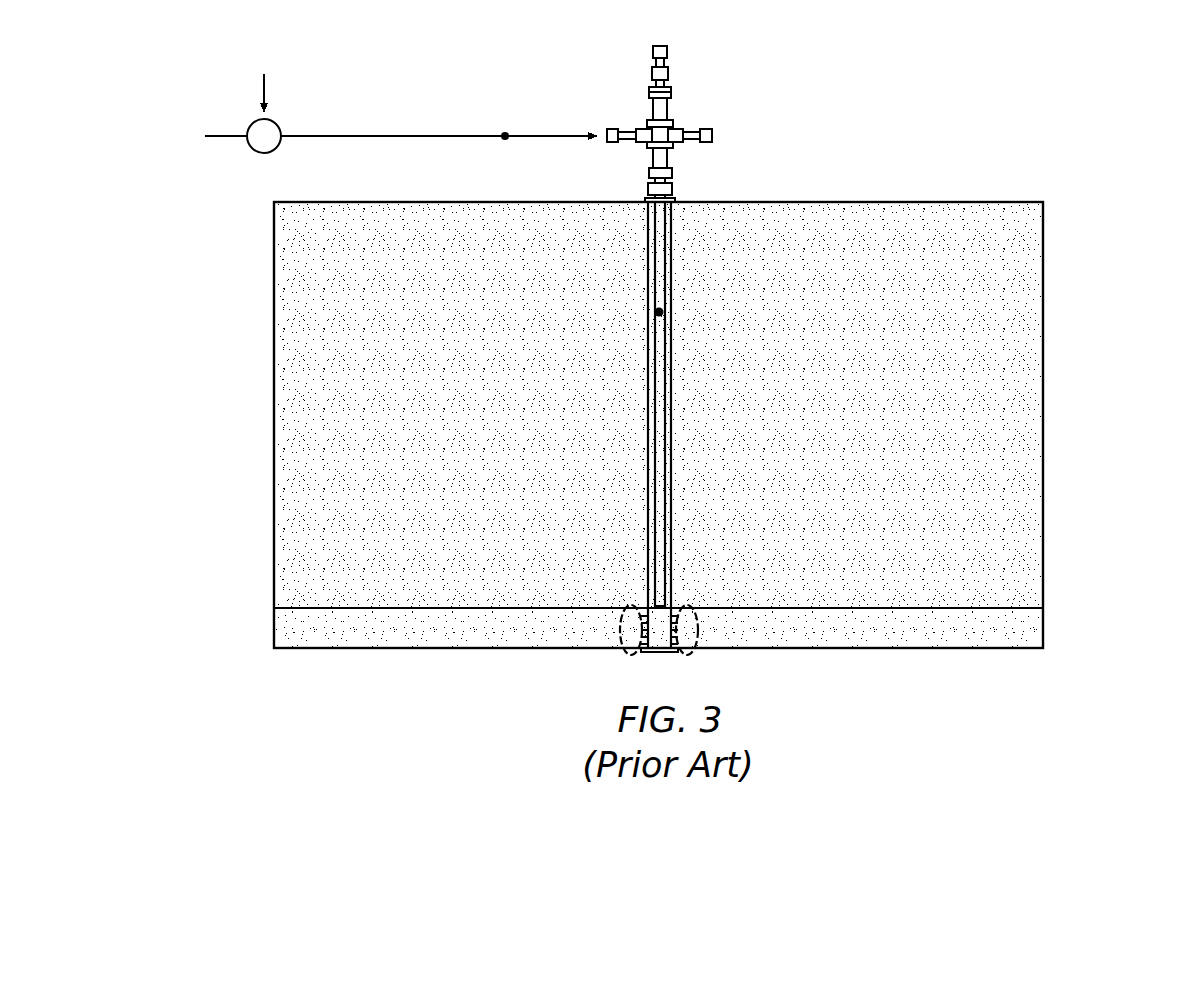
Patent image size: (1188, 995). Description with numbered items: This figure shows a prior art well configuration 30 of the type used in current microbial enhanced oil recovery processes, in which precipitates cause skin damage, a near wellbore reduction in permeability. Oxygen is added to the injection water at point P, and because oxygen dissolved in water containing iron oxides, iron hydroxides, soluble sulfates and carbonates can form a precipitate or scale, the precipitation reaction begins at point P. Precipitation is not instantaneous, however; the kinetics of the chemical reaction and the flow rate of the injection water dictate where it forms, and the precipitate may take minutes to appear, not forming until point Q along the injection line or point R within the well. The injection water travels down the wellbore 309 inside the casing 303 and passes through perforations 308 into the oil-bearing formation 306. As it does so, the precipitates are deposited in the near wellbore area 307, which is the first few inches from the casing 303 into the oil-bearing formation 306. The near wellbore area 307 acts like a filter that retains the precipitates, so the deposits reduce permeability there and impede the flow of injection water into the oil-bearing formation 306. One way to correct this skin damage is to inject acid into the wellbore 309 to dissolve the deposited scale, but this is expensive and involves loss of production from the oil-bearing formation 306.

The prior art well configuration 30 is at (924, 102).
The wellbore 309 is at (644, 216).
The casing 303 is at (673, 373).
The perforations 308 is at (669, 626).
The near wellbore area 307 is at (620, 630).
The oil-bearing formation 306 is at (1045, 627).
The point P is at (401, 114).
The point Q is at (505, 122).
The point R is at (659, 312).